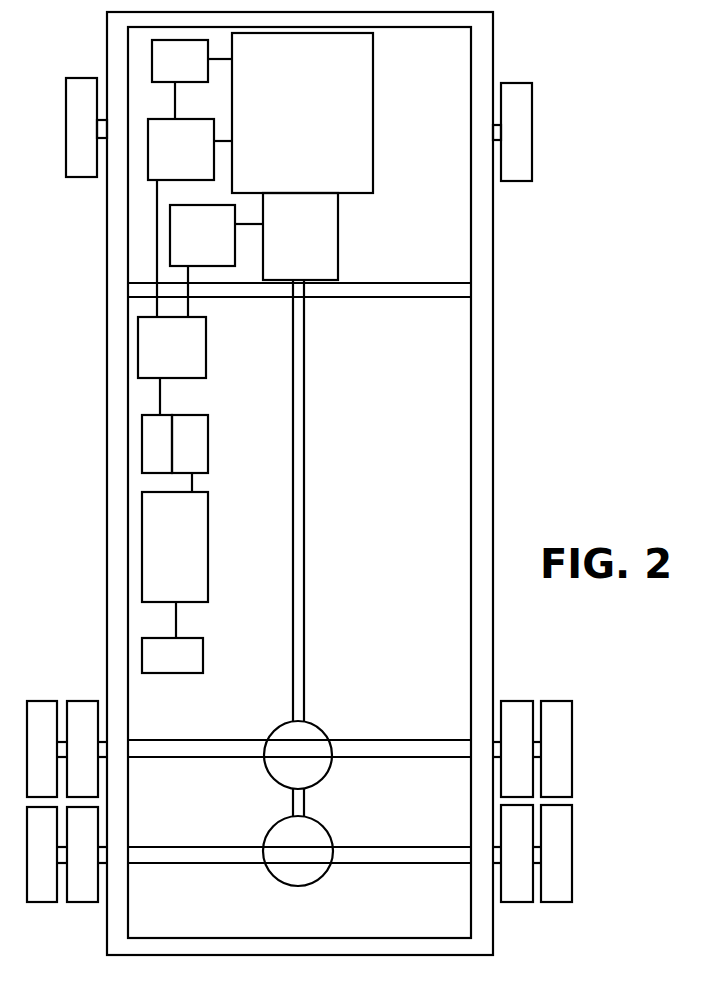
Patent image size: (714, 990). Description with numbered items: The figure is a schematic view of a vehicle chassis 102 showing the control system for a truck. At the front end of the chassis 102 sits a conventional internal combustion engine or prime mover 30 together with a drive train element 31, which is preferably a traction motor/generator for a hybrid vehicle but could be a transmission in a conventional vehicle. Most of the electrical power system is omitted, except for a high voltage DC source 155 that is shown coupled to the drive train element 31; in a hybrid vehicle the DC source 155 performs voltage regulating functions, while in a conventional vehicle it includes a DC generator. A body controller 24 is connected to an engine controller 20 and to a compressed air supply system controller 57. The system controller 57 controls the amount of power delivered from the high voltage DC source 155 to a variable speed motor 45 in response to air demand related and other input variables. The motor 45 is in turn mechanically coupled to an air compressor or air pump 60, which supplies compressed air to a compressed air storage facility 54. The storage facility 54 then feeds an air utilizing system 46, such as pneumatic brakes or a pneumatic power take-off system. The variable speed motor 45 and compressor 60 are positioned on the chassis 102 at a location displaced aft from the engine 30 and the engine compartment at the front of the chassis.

The vehicle chassis 102 is at (518, 300).
The engine controller 20 is at (174, 62).
The body controller 24 is at (157, 160).
The internal combustion engine 30 is at (345, 108).
The drive train element 31 is at (318, 237).
The high voltage DC source 155 is at (210, 242).
The compressed air supply system controller 57 is at (165, 345).
The variable speed motor 45 is at (160, 446).
The air compressor 60 is at (188, 453).
The compressed air storage facility 54 is at (186, 505).
The air utilizing system 46 is at (158, 657).